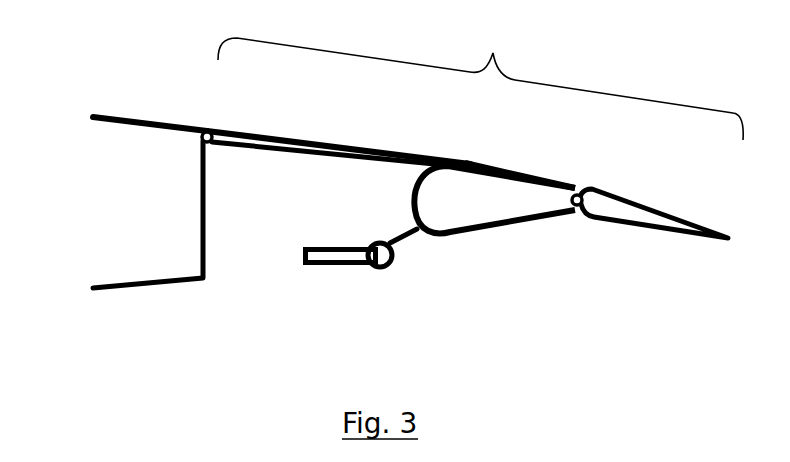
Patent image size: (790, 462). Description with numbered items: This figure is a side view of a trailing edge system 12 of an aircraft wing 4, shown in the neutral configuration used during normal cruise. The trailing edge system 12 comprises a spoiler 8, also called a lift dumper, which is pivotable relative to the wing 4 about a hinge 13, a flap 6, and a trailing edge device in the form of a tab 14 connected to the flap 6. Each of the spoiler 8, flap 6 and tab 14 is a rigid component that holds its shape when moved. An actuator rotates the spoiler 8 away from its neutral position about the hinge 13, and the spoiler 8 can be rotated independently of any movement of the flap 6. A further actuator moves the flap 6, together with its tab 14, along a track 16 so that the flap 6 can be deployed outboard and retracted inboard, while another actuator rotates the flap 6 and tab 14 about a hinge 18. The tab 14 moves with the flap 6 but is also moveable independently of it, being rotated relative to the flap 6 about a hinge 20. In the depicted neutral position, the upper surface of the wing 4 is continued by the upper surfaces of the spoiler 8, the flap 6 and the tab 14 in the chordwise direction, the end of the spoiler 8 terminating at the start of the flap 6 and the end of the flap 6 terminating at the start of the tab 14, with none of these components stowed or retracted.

The wing 4 is at (84, 94).
The trailing edge system 12 is at (480, 82).
The spoiler 8 is at (235, 130).
The hinge 13 is at (211, 143).
The flap 6 is at (492, 178).
The tab 14 is at (603, 200).
The hinge 20 is at (580, 207).
The track 16 is at (322, 263).
The hinge 18 is at (386, 270).